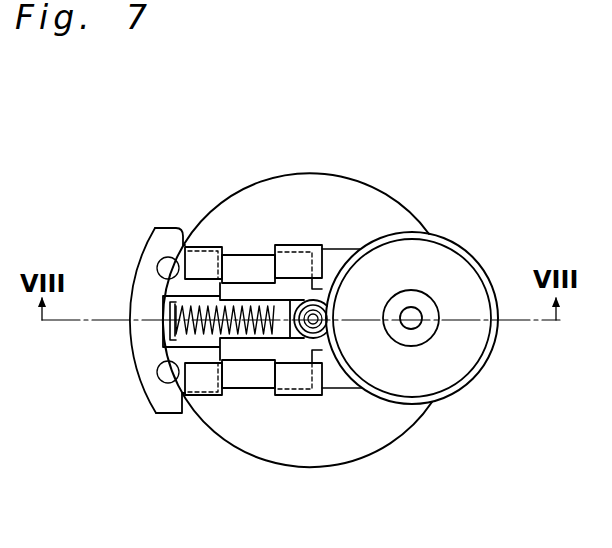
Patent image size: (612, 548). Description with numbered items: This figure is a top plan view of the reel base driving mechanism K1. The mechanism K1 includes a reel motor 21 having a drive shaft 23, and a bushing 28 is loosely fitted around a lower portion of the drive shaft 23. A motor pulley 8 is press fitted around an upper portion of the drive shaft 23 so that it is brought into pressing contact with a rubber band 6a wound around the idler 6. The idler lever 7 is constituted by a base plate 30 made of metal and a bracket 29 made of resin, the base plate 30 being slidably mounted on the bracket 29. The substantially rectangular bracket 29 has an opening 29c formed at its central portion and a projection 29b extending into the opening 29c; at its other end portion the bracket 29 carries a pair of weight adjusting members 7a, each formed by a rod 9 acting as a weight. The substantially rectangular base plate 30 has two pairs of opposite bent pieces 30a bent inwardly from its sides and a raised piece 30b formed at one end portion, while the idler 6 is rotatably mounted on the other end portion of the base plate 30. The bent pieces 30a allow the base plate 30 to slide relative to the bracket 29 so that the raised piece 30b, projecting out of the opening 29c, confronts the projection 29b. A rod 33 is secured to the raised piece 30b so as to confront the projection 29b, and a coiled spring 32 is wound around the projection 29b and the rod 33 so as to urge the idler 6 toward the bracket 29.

The idler 6 is at (447, 370).
The rubber band 6a is at (485, 350).
The idler lever 7 is at (168, 226).
The weight adjusting members 7a is at (149, 267).
The motor pulley 8 is at (338, 336).
The rod 9 is at (167, 268).
The reel motor 21 is at (355, 178).
The drive shaft 23 is at (334, 308).
The bushing 28 is at (326, 303).
The bracket 29 is at (152, 252).
The projection 29b is at (280, 343).
The opening 29c is at (203, 343).
The base plate 30 is at (344, 389).
The bent pieces 30a is at (288, 245).
The raised piece 30b is at (168, 328).
The coiled spring 32 is at (165, 354).
The rod 33 is at (189, 312).
The reel base driving mechanism K1 is at (309, 212).